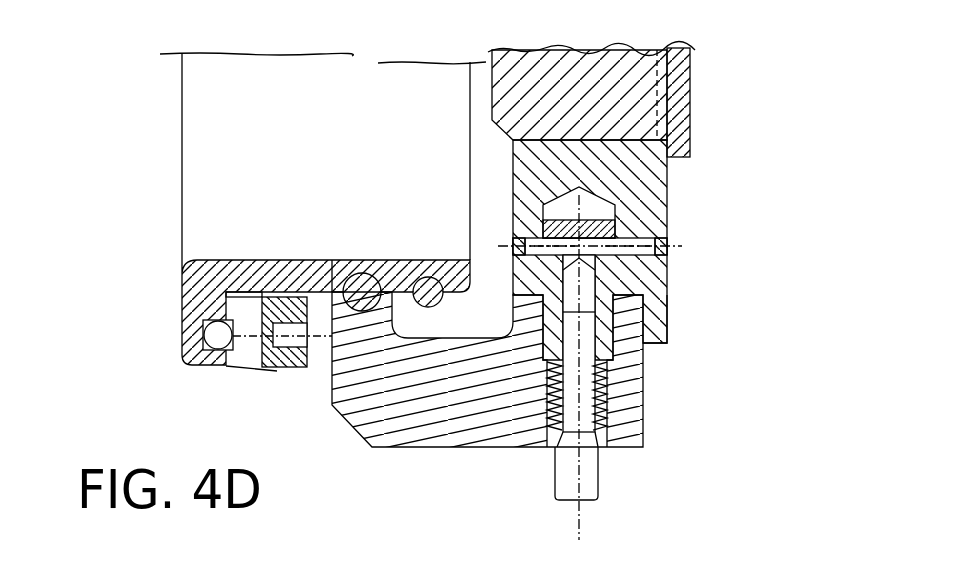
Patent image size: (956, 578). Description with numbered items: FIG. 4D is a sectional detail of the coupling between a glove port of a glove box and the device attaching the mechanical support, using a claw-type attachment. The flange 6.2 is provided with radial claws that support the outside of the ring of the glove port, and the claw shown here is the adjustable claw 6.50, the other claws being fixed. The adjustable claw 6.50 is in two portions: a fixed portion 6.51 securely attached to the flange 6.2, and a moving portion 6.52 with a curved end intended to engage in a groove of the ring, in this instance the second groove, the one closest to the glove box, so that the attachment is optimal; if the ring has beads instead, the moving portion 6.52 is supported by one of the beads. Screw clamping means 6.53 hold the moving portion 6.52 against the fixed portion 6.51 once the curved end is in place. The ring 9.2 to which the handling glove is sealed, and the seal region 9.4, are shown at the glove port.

The handling glove 9.2 is at (245, 268).
The seal 9.4 is at (387, 262).
The flange 6.2 is at (662, 98).
The adjustable claw 6.50 is at (681, 337).
The fixed portion 6.51 is at (660, 185).
The moving portion 6.52 is at (420, 432).
The screw clamping means 6.53 is at (605, 395).